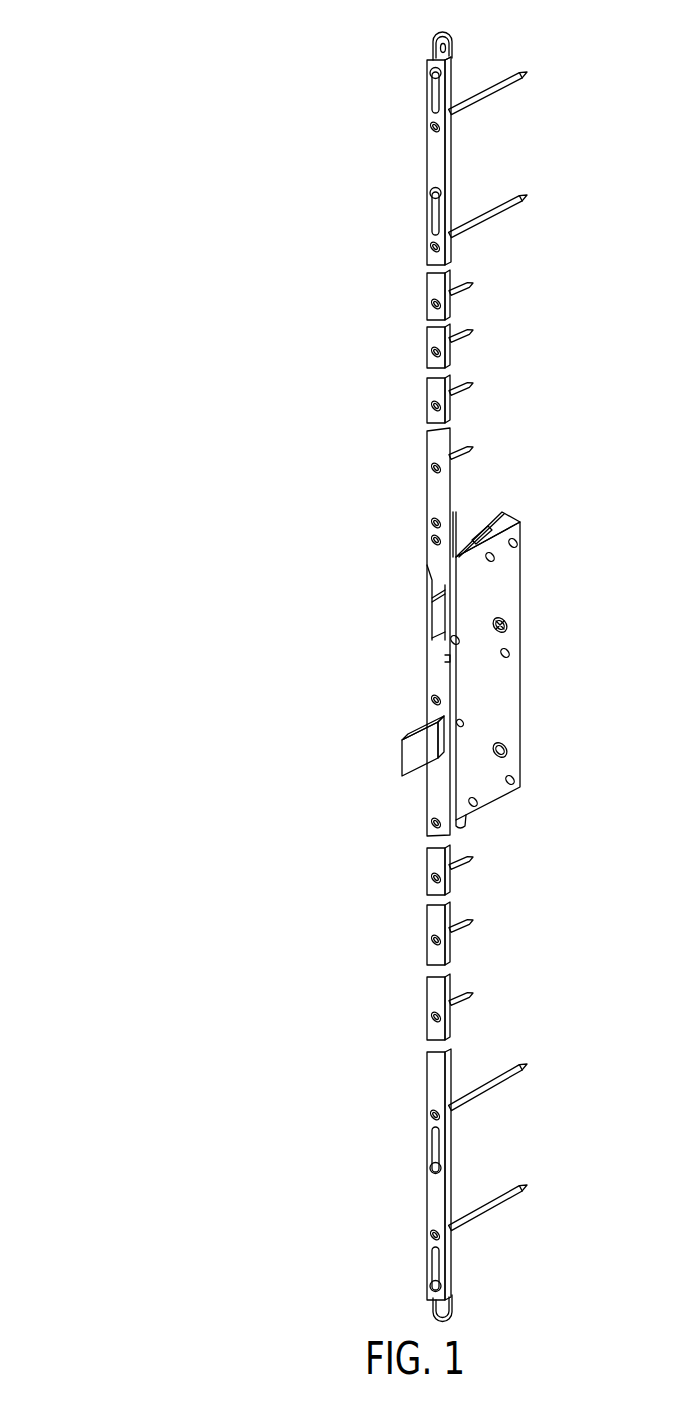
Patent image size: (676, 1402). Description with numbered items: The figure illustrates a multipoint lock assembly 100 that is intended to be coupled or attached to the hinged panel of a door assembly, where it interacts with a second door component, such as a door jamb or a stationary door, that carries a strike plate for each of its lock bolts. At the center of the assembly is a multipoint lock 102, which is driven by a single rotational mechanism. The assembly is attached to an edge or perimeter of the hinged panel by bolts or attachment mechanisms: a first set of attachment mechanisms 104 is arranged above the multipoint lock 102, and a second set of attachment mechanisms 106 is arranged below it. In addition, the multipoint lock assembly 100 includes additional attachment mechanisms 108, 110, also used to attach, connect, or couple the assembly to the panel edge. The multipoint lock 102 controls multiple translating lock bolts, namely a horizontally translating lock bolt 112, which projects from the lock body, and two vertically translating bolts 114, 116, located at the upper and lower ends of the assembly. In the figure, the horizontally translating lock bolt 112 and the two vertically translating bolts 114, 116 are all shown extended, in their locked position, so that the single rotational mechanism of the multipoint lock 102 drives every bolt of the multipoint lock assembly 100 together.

The multipoint lock assembly 100 is at (97, 76).
The multipoint lock 102 is at (380, 547).
The first set of attachment mechanisms 104 is at (540, 47).
The second set of attachment mechanisms 106 is at (533, 1040).
The additional attachment mechanisms 108 is at (490, 265).
The additional attachment mechanisms 110 is at (497, 840).
The horizontally translating lock bolt 112 is at (368, 767).
The vertically translating bolt 114 is at (414, 33).
The vertically translating bolt 116 is at (470, 1308).